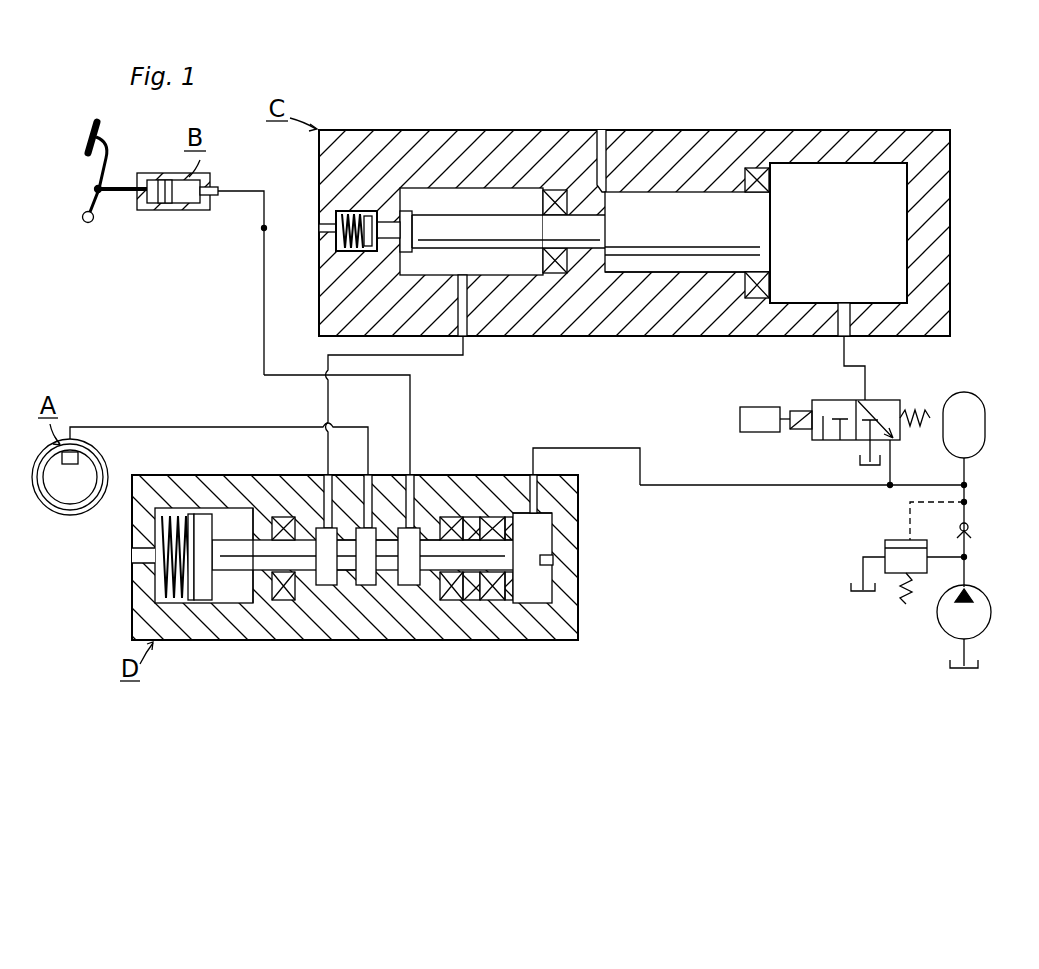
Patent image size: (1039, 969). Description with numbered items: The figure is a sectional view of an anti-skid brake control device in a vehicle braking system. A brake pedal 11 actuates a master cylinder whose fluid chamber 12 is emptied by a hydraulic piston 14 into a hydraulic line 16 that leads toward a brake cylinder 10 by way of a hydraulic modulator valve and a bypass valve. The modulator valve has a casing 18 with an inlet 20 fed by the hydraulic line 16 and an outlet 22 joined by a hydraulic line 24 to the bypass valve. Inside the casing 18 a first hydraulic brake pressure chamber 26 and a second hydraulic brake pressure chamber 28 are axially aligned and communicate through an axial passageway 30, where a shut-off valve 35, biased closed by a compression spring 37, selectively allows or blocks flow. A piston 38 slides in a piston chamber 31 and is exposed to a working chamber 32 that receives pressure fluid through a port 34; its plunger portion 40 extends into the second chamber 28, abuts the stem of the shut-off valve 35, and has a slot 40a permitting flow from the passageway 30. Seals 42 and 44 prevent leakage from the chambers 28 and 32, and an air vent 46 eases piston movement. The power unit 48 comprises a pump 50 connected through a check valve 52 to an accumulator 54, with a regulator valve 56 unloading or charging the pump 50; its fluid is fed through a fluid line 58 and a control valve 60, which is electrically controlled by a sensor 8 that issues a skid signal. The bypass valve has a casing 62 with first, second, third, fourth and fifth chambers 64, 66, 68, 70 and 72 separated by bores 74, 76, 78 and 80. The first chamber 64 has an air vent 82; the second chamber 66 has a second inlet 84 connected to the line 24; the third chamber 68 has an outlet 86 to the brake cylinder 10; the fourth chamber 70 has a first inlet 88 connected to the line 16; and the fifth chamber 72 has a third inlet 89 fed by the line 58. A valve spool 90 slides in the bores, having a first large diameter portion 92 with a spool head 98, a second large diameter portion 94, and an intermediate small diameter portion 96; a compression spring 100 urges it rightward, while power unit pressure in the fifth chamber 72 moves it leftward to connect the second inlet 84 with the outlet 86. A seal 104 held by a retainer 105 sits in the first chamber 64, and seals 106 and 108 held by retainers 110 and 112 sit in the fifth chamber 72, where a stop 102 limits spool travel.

The sensor 8 is at (776, 420).
The brake cylinder 10 is at (86, 449).
The brake pedal 11 is at (104, 128).
The fluid chamber 12 is at (181, 203).
The hydraulic piston 14 is at (165, 204).
The hydraulic line 16 is at (247, 191).
The casing 18 is at (437, 140).
The inlet 20 is at (322, 231).
The outlet 22 is at (466, 340).
The hydraulic line 24 is at (433, 357).
The first hydraulic brake pressure chamber 26 is at (341, 253).
The second hydraulic brake pressure chamber 28 is at (471, 190).
The axial passageway 30 is at (372, 211).
The piston chamber 31 is at (693, 194).
The working chamber 32 is at (862, 172).
The port 34 is at (840, 339).
The shut-off valve 35 is at (337, 258).
The compression spring 37 is at (328, 210).
The piston 38 is at (694, 275).
The plunger portion 40 is at (511, 215).
The slot 40a is at (412, 214).
The seal 42 is at (556, 190).
The seal 44 is at (757, 168).
The air vent 46 is at (601, 132).
The power unit 48 is at (940, 410).
The pump 50 is at (946, 625).
The check valve 52 is at (958, 529).
The accumulator 54 is at (942, 448).
The regulator valve 56 is at (896, 540).
The fluid line 58 is at (786, 485).
The control valve 60 is at (862, 398).
The casing 62 is at (204, 486).
The first chamber 64 is at (248, 604).
The second chamber 66 is at (332, 587).
The third chamber 68 is at (370, 588).
The fourth chamber 70 is at (412, 588).
The fifth chamber 72 is at (545, 522).
The bore 74 is at (345, 572).
The bore 76 is at (387, 572).
The bore 78 is at (428, 572).
The bore 80 is at (452, 601).
The air vent 82 is at (133, 555).
The second inlet 84 is at (329, 480).
The outlet 86 is at (369, 480).
The first inlet 88 is at (410, 480).
The third inlet 89 is at (535, 475).
The valve spool 90 is at (237, 540).
The first large diameter portion 92 is at (215, 560).
The second large diameter portion 94 is at (532, 559).
The intermediate small diameter portion 96 is at (350, 575).
The spool head 98 is at (200, 604).
The compression spring 100 is at (166, 512).
The stop 102 is at (554, 561).
The seal 104 is at (289, 601).
The retainer 105 is at (268, 516).
The seal 106 is at (487, 603).
The seal 108 is at (500, 603).
The retainer 110 is at (471, 517).
The retainer 112 is at (532, 480).